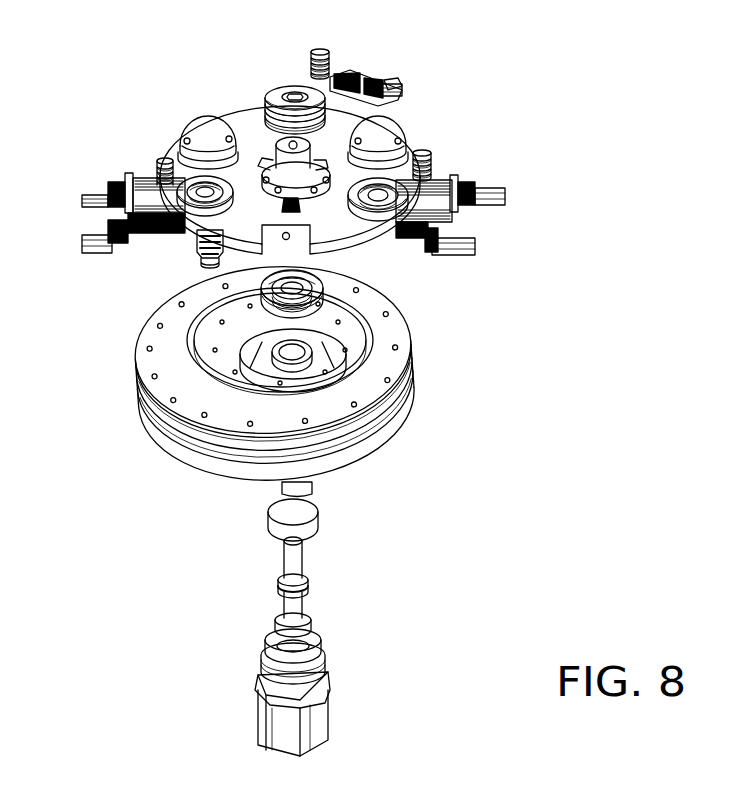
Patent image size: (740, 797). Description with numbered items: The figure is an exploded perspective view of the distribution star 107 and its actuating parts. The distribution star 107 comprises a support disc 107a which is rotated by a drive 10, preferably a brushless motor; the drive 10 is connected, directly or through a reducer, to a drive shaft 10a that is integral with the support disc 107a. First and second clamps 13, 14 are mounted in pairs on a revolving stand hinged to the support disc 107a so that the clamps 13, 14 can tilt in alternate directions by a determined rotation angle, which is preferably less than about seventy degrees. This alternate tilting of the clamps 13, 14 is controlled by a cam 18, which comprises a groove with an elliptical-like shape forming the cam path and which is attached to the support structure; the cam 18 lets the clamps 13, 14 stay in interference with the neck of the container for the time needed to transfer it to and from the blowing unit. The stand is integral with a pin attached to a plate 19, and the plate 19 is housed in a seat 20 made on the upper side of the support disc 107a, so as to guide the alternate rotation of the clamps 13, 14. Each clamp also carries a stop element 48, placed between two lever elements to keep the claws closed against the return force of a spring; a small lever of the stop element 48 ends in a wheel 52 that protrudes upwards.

The drive 10 is at (330, 693).
The drive shaft 10a is at (303, 552).
The first clamp 13 is at (132, 152).
The second clamp 14 is at (102, 257).
The cam 18 is at (363, 358).
The plate 19 is at (275, 85).
The seat 20 is at (200, 118).
The stop element 48 is at (386, 94).
The wheel 52 is at (322, 54).
The distribution star 107 is at (482, 155).
The support disc 107a is at (362, 130).